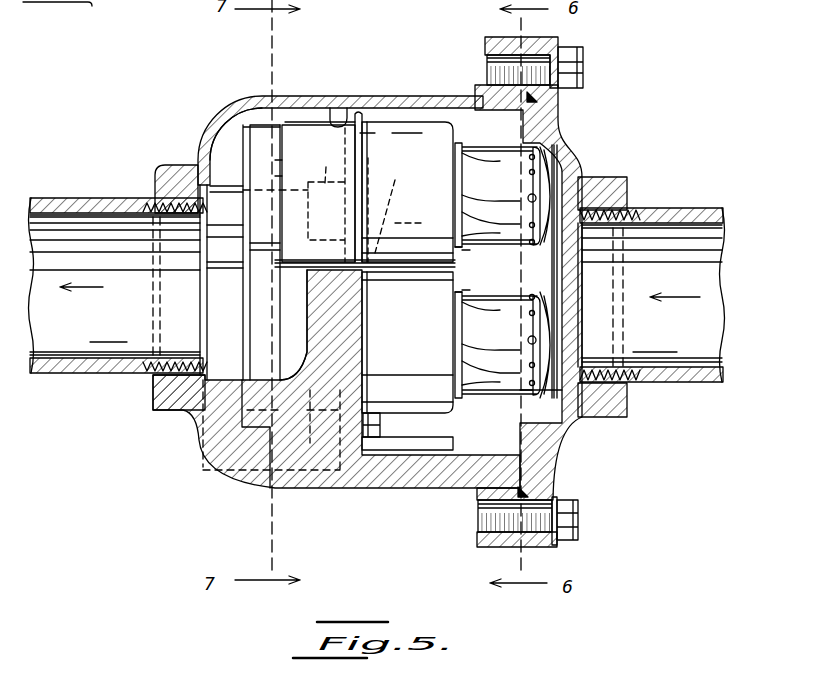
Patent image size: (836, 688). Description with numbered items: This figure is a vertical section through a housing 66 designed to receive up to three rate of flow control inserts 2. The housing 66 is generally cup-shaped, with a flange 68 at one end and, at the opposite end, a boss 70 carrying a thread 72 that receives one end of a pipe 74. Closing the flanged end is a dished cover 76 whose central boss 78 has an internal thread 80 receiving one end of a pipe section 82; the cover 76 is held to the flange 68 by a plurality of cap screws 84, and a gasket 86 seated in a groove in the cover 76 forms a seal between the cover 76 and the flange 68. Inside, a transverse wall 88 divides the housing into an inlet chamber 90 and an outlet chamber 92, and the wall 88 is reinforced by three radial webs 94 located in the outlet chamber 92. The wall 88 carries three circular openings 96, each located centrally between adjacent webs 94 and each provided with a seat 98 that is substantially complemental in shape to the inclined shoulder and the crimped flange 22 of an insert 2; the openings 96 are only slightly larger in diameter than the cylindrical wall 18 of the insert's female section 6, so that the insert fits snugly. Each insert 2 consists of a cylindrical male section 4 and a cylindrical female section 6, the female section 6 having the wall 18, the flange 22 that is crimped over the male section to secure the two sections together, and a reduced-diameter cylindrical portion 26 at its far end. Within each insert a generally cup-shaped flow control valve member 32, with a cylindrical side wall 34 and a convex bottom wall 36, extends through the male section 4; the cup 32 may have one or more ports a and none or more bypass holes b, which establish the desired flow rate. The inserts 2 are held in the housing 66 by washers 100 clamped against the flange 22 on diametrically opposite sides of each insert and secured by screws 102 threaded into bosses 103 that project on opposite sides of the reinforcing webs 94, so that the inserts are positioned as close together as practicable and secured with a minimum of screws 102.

The rate of flow control insert 2 is at (471, 147).
The cylindrical male section 4 is at (422, 137).
The cylindrical female section 6 is at (257, 177).
The cylindrical wall 18 is at (310, 130).
The flange 22 is at (391, 133).
The reduced-diameter cylindrical portion 26 is at (268, 216).
The flow control valve member 32 is at (477, 258).
The cylindrical side wall 34 is at (478, 176).
The convex bottom wall 36 is at (580, 250).
The housing 66 is at (418, 94).
The flange 68 is at (487, 43).
The boss 70 is at (178, 163).
The thread 72 is at (170, 192).
The pipe 74 is at (88, 376).
The dished cover 76 is at (558, 107).
The central boss 78 is at (618, 182).
The internal thread 80 is at (613, 210).
The pipe section 82 is at (700, 215).
The cap screws 84 is at (585, 58).
The gasket 86 is at (540, 100).
The transverse wall 88 is at (362, 357).
The inlet chamber 90 is at (448, 455).
The outlet chamber 92 is at (228, 148).
The radial webs 94 is at (235, 247).
The circular openings 96 is at (332, 112).
The seat 98 is at (357, 115).
The washers 100 is at (374, 170).
The screws 102 is at (395, 200).
The bosses 103 is at (378, 382).
The ports a is at (470, 208).
The bypass holes b is at (522, 172).